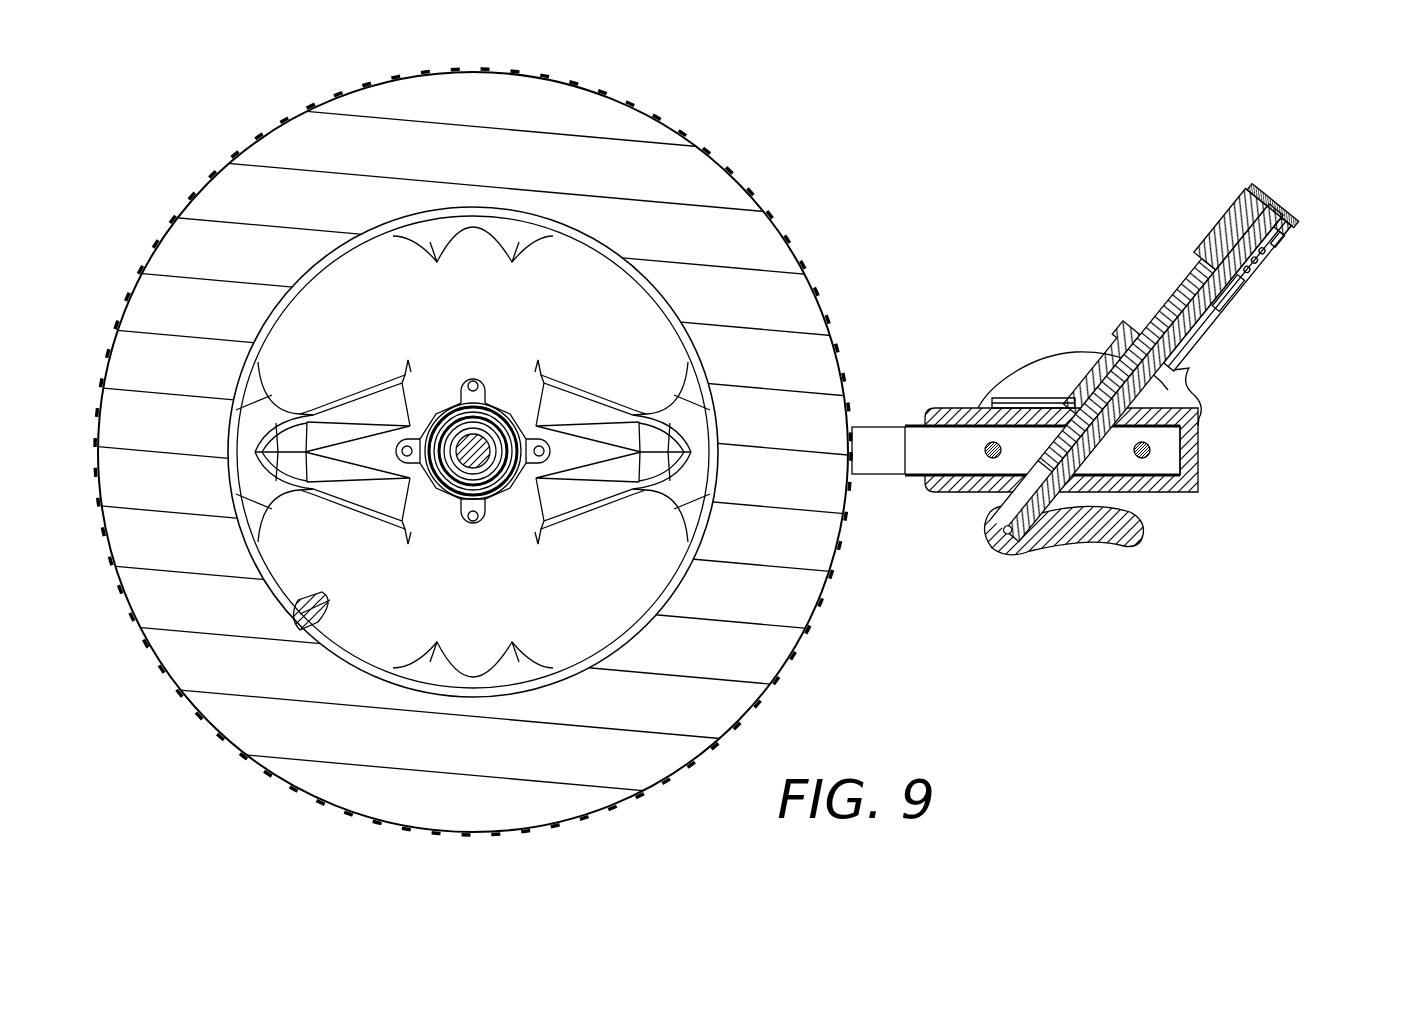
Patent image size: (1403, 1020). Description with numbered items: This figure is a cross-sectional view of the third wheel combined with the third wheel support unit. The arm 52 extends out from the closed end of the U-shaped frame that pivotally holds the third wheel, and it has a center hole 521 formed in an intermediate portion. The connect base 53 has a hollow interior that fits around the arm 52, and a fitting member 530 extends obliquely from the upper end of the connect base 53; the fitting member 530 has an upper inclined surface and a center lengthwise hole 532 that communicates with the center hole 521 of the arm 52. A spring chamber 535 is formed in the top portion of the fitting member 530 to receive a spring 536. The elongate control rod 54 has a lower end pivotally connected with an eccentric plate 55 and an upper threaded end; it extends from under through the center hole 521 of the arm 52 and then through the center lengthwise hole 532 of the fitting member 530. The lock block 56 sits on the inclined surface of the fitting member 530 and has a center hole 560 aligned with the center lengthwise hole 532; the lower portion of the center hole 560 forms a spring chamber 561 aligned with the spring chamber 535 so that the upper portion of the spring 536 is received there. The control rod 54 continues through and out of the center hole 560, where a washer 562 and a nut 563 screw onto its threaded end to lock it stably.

The arm 52 is at (877, 467).
The center hole 521 is at (992, 398).
The connect base 53 is at (1068, 375).
The fitting member 530 is at (1205, 325).
The center lengthwise hole 532 is at (1173, 290).
The spring chamber 535 is at (1255, 275).
The spring 536 is at (1278, 262).
The control rod 54 is at (1190, 400).
The eccentric plate 55 is at (1092, 527).
The lock block 56 is at (1245, 210).
The center hole 560 is at (1270, 194).
The spring chamber 561 is at (1212, 236).
The washer 562 is at (1300, 220).
The nut 563 is at (1300, 200).